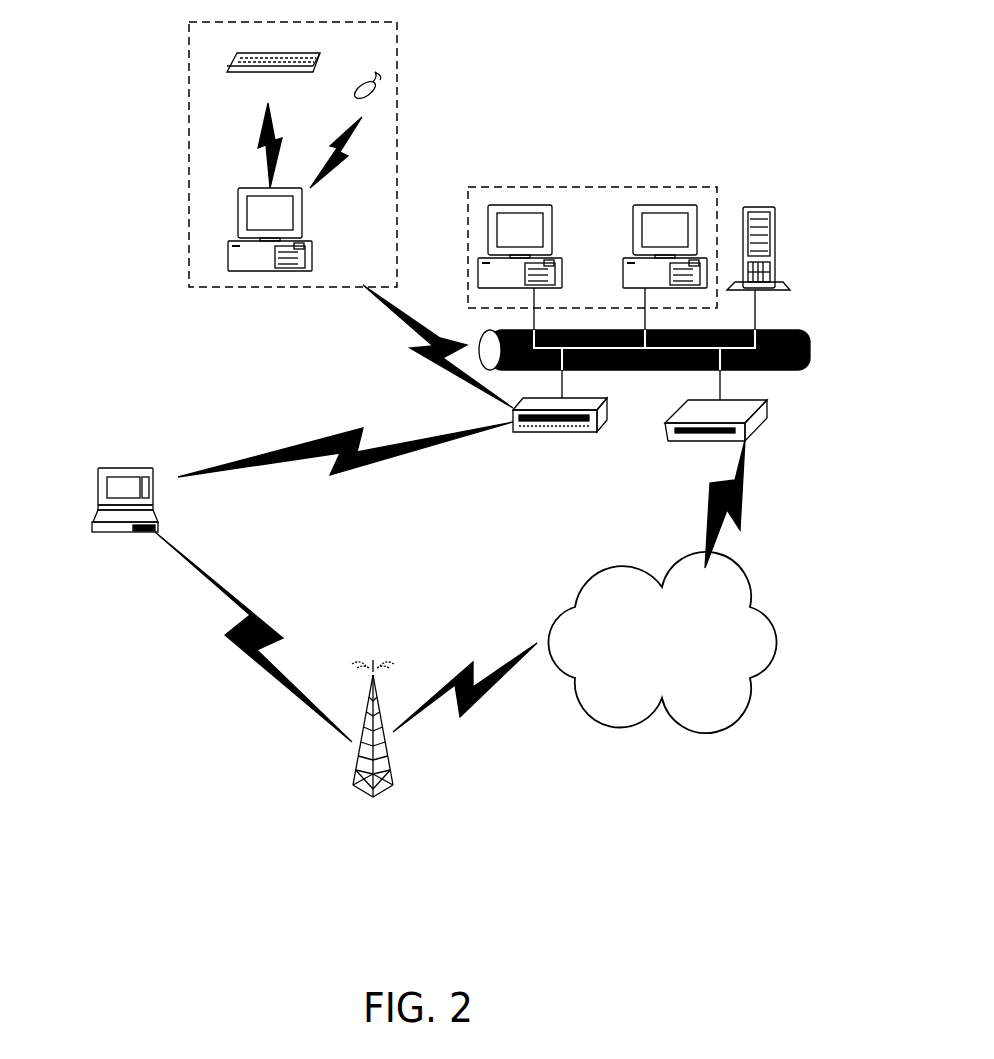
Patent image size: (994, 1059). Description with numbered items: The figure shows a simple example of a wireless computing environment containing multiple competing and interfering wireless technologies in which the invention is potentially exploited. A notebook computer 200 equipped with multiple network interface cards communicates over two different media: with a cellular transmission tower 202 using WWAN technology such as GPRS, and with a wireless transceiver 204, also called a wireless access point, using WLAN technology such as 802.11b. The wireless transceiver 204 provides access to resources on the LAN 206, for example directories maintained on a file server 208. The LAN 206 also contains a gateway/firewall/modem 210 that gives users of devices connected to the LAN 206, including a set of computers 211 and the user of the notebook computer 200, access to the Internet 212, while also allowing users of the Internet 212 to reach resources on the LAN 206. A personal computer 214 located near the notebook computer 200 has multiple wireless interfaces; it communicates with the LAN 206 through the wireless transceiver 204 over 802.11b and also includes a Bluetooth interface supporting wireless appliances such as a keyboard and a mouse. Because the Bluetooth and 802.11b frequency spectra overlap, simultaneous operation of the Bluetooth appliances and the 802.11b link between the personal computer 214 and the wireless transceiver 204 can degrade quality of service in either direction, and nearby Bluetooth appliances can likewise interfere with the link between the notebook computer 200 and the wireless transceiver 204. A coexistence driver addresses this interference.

The notebook computer 200 is at (125, 468).
The cellular transmission tower 202 is at (357, 827).
The wireless transceiver 204 is at (557, 432).
The LAN 206 is at (810, 350).
The file server 208 is at (778, 227).
The gateway/firewall/modem 210 is at (760, 440).
The set of computers 211 is at (657, 185).
The Internet 212 is at (683, 672).
The personal computer 214 is at (190, 227).